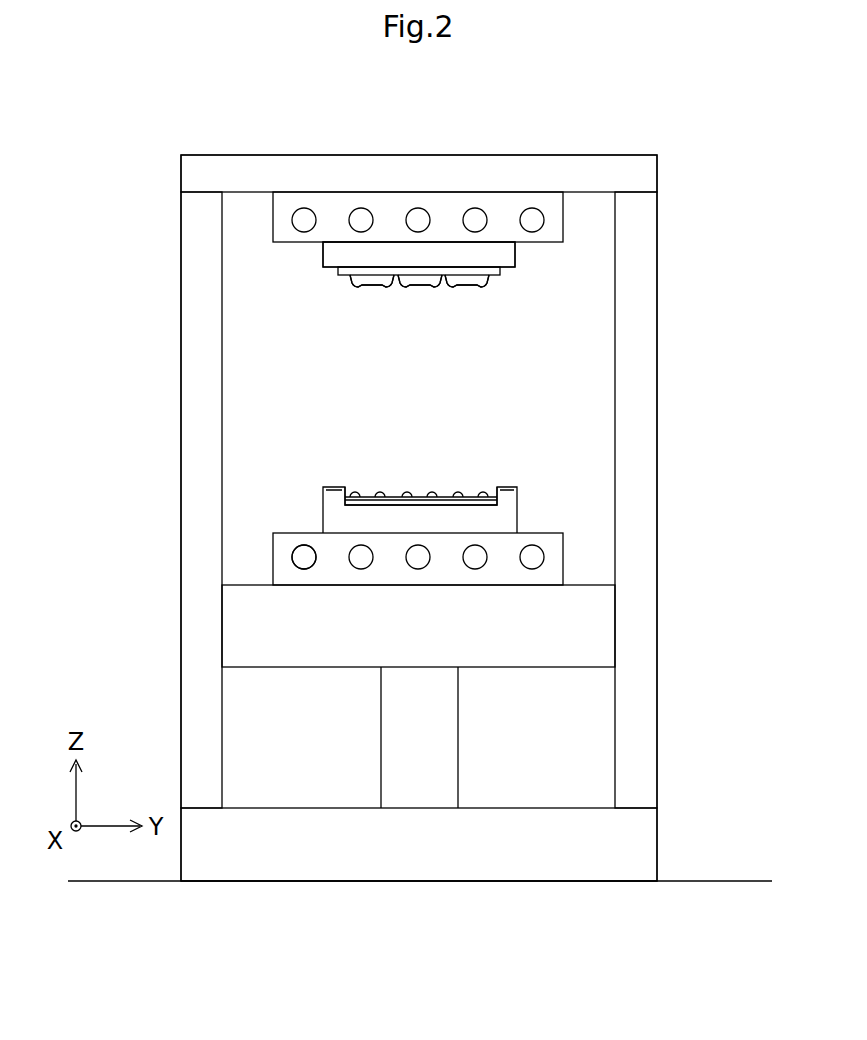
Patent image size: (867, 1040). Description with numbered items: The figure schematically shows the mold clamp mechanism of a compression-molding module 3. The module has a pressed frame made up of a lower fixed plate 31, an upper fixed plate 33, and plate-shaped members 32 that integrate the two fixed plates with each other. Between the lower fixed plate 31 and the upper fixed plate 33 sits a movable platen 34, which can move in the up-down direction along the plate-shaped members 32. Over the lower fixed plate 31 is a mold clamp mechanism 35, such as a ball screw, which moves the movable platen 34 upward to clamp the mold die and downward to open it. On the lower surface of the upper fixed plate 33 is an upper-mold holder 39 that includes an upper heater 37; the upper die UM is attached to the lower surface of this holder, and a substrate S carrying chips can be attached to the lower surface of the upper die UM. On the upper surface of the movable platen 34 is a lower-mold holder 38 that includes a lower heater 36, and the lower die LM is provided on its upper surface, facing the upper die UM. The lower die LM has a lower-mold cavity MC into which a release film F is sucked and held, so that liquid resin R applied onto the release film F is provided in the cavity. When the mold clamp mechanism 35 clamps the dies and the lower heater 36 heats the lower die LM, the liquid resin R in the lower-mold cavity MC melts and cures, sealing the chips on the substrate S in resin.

The compression-molding module 3 is at (118, 203).
The lower fixed plate 31 is at (643, 850).
The plate-shaped members 32 is at (205, 395).
The upper fixed plate 33 is at (643, 172).
The movable platen 34 is at (595, 618).
The mold clamp mechanism 35 is at (398, 725).
The lower heater 36 is at (305, 570).
The upper heater 37 is at (360, 207).
The lower-mold holder 38 is at (273, 555).
The upper-mold holder 39 is at (533, 243).
The upper die UM is at (333, 255).
The lower die LM is at (330, 517).
The substrate S is at (490, 277).
The release film F is at (393, 497).
The liquid resin R is at (432, 497).
The lower-mold cavity MC is at (478, 497).